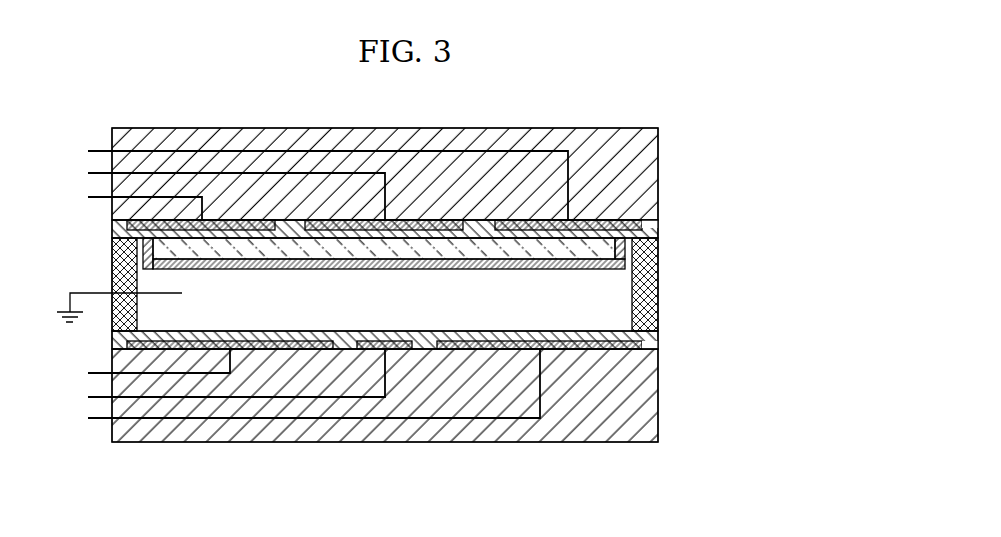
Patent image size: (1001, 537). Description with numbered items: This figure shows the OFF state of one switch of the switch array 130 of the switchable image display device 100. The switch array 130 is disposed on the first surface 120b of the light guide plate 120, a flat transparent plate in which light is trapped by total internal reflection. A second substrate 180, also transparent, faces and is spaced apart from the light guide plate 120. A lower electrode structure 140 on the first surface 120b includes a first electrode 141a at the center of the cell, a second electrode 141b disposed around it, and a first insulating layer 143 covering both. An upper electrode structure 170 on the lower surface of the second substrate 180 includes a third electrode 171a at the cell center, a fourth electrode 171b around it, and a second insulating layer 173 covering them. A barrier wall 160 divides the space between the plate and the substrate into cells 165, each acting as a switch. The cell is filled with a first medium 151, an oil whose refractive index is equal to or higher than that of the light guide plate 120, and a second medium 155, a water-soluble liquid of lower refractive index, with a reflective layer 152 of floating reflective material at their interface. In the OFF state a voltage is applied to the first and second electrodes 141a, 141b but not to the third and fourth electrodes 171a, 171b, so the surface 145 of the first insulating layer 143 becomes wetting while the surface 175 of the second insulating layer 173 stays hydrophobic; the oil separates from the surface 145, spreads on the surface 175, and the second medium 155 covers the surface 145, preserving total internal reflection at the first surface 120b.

The electrowetting display device 100 is at (731, 93).
The switch array 130 is at (740, 153).
The second substrate 180 is at (655, 173).
The second insulating layer 173 is at (648, 233).
The fourth electrode 171b is at (240, 220).
The third electrode 171a is at (420, 220).
The upper electrode structure 170 is at (657, 224).
The first medium 151 is at (610, 247).
The reflective layer 152 is at (620, 264).
The cell 165 is at (130, 274).
The surface of the second insulating layer 175 is at (182, 243).
The barrier wall 160 is at (645, 285).
The second medium 155 is at (620, 308).
The first insulating layer 143 is at (656, 337).
The second electrode 141b is at (270, 349).
The first electrode 141a is at (368, 349).
The lower electrode structure 140 is at (657, 342).
The surface of the first insulating layer 145 is at (173, 328).
The light guide plate 120 is at (658, 395).
The first surface 120b is at (412, 343).